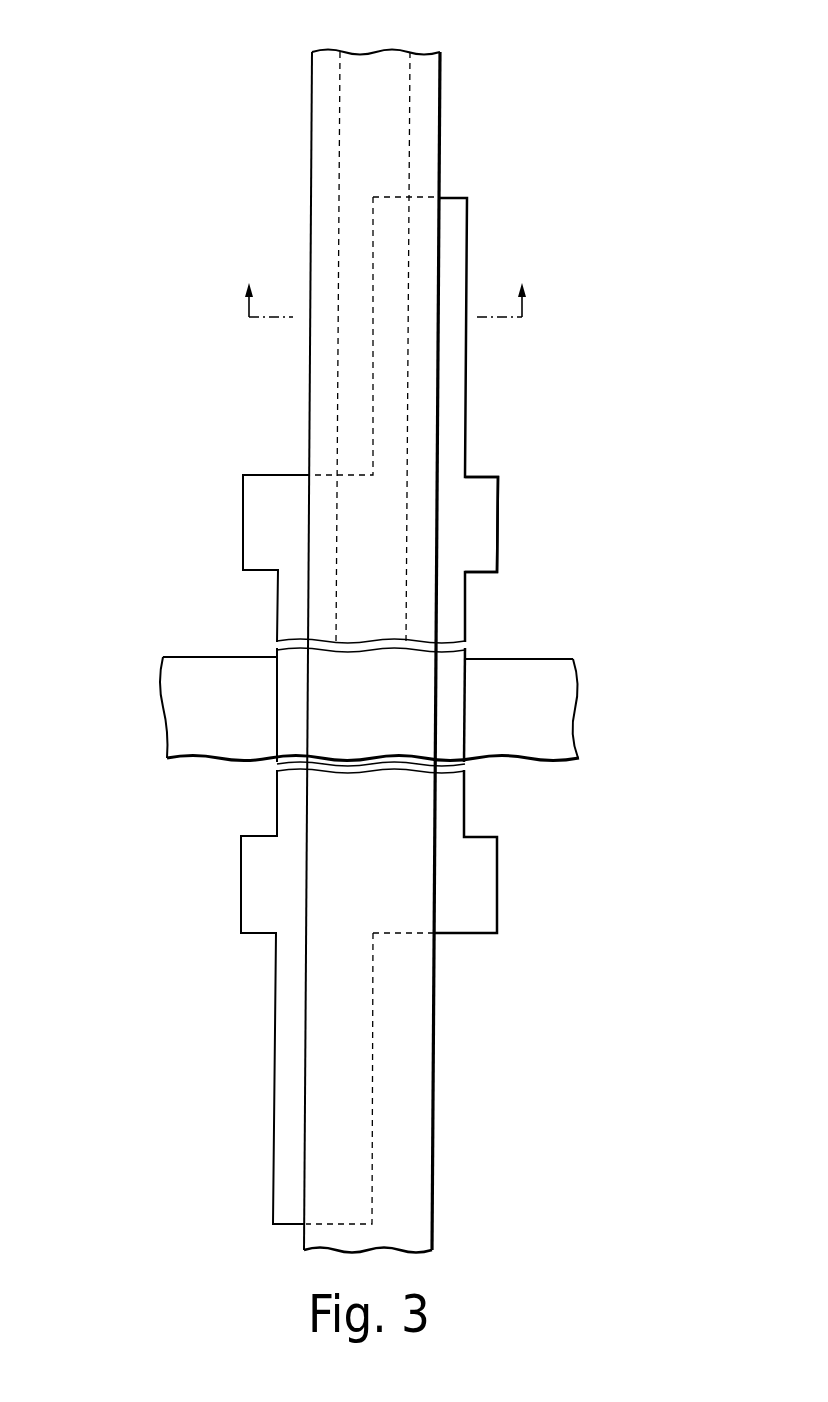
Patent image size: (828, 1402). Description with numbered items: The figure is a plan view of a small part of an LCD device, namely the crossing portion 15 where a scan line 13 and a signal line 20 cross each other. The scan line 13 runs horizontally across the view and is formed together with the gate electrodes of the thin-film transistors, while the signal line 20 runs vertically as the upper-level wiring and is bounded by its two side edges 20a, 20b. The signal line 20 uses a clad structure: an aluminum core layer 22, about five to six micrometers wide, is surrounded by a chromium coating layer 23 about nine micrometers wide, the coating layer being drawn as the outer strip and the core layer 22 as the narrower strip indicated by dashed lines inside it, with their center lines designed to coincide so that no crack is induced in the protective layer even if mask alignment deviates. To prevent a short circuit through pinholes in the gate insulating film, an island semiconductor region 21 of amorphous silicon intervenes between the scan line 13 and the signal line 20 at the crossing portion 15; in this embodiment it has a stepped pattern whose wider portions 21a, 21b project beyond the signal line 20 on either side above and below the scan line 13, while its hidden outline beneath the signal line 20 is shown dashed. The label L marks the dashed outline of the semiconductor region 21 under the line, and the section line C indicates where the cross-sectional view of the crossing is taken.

The scan line 13 is at (573, 692).
The crossing portion 15 is at (402, 626).
The signal line 20 is at (425, 626).
The side edge of signal line 20a is at (312, 168).
The side edge of signal line 20b is at (441, 125).
The semiconductor region 21 is at (379, 654).
The portion of semiconductor region 21a is at (255, 550).
The portion of semiconductor region 21b is at (490, 558).
The core layer 22 is at (388, 60).
The coating layer 23 is at (427, 72).
The overlap length L is at (395, 195).
The section line C- C is at (389, 285).